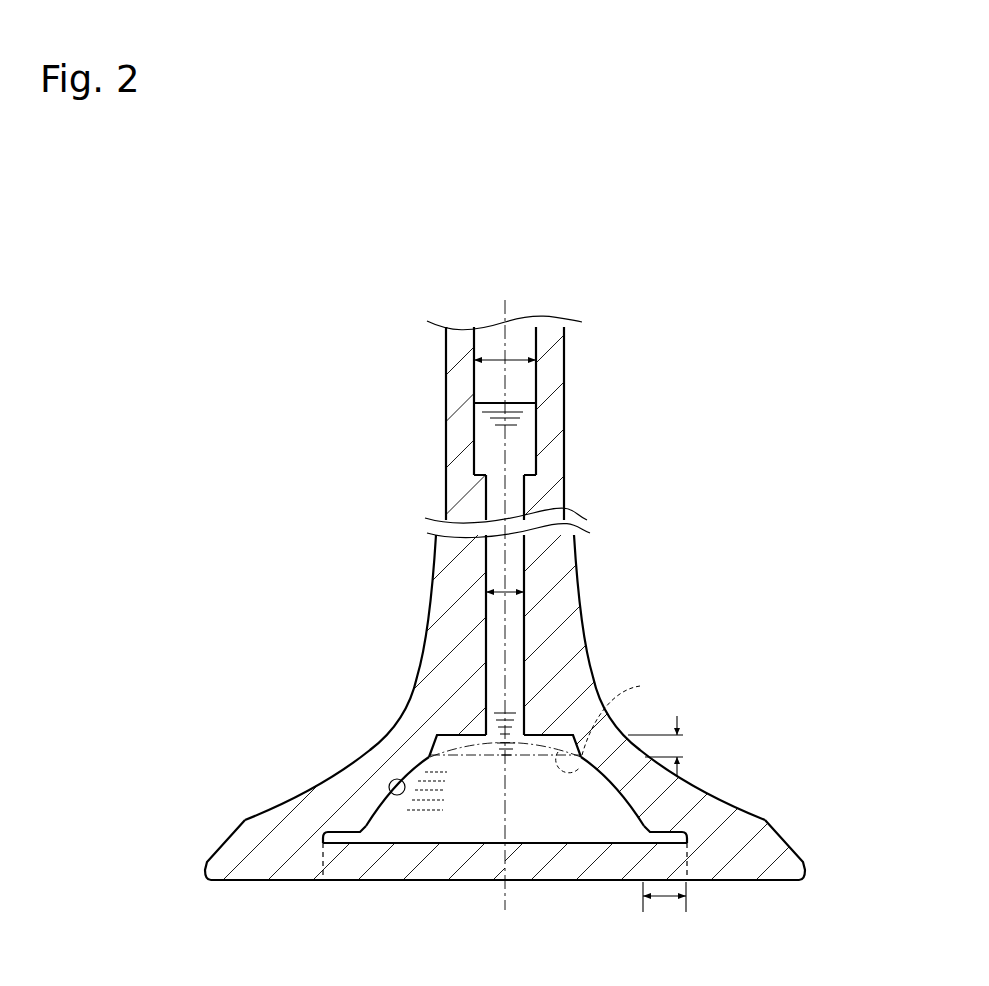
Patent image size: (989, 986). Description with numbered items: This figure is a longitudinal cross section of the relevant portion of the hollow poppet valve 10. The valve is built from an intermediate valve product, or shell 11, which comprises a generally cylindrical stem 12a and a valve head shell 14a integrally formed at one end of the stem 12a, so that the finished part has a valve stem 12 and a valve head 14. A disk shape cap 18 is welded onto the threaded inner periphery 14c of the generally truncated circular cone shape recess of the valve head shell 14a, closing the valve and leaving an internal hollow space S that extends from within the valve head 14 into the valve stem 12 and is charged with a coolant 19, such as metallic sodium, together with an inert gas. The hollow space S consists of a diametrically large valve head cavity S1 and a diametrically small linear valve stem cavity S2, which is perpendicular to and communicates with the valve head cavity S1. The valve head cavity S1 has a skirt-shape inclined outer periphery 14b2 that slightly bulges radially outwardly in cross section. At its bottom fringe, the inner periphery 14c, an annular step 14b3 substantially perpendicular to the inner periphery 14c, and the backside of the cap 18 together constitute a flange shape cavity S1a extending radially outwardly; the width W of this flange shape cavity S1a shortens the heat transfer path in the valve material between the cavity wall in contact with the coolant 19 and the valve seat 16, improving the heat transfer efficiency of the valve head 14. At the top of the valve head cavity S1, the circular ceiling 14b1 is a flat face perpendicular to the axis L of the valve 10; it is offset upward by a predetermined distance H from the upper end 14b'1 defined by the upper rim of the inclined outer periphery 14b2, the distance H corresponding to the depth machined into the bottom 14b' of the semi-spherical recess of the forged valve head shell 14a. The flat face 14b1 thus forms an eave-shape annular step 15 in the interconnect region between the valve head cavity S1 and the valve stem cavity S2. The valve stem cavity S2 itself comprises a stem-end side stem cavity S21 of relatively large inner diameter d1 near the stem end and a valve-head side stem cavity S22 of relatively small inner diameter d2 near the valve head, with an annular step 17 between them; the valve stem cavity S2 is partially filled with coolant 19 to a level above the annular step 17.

The hollow poppet valve 10 is at (416, 603).
The intermediate valve product (shell) 11 is at (416, 603).
The valve stem 12 is at (505, 568).
The stem 12a is at (505, 568).
The valve head 14 is at (519, 827).
The valve head shell 14a is at (519, 827).
The circular ceiling 14b1 is at (505, 860).
The ceiling (upper end) defined by upper rim of inclined outer periphery 14b'1 is at (532, 846).
The skirt-shape inclined outer periphery 14b2 is at (397, 782).
The bottom of semi-spherical recess 14b' is at (623, 721).
The annular step 14b3 is at (353, 832).
The inner periphery 14c is at (324, 843).
The eave-shape annular step 15 is at (463, 737).
The valve seat 16 is at (777, 838).
The annular step 17 is at (527, 474).
The cap 18 is at (603, 868).
The coolant 19 is at (520, 402).
The internal hollow space S is at (417, 531).
The valve head cavity S1 is at (598, 808).
The flange shape cavity S1a is at (339, 829).
The valve stem cavity S2 is at (417, 531).
The stem-end side stem cavity S21 is at (487, 390).
The valve-head side stem cavity S22 is at (454, 602).
The inner diameter of stem-end side stem cavity d1 is at (513, 357).
The diameter of small stem hollow d2 is at (515, 591).
The offset distance H is at (666, 746).
The width of flange shape cavity W is at (664, 906).
The axis of the valve L is at (505, 897).